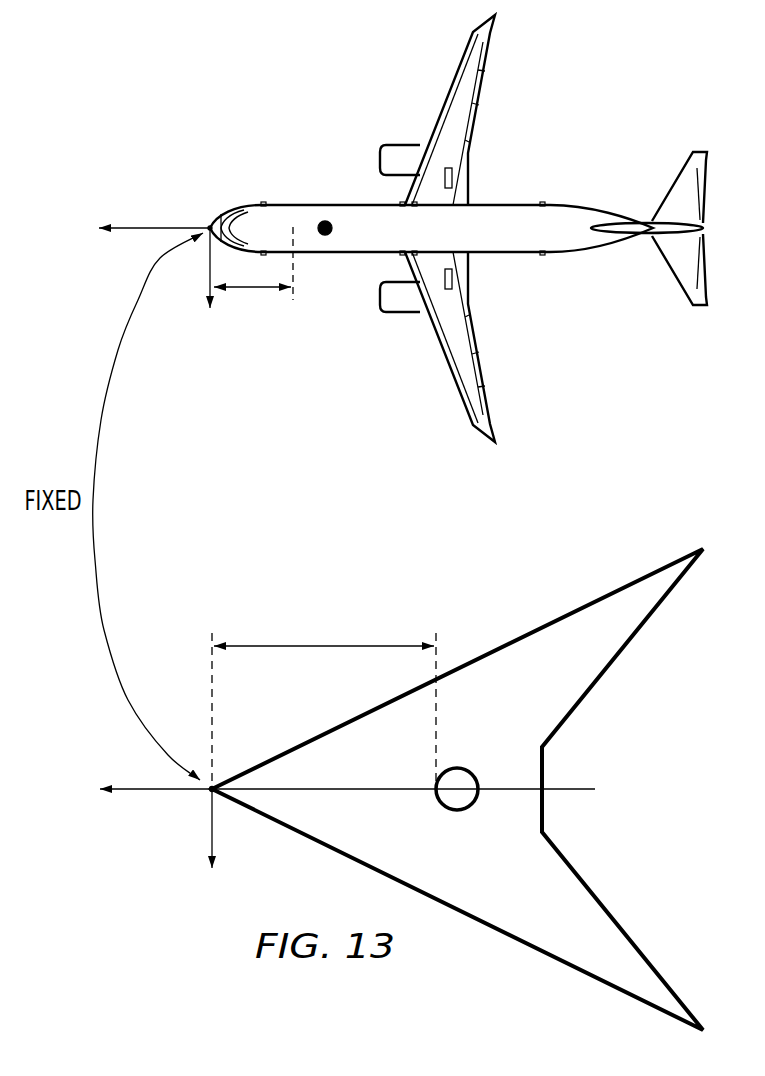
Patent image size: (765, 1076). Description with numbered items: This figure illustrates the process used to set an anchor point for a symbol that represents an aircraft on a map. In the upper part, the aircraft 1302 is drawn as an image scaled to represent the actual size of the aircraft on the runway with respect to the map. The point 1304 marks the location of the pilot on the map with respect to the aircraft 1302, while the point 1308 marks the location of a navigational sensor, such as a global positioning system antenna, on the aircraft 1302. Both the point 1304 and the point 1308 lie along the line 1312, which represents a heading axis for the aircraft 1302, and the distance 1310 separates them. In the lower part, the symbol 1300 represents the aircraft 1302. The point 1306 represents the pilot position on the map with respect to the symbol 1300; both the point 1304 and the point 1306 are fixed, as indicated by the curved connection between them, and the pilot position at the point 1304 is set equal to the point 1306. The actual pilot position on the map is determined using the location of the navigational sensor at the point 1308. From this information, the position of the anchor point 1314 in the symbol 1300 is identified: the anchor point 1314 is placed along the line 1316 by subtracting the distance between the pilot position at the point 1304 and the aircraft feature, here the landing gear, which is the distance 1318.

The symbol 1300 is at (594, 982).
The aircraft 1302 is at (450, 82).
The point 1304 is at (207, 226).
The point 1306 is at (208, 796).
The point 1308 is at (326, 219).
The distance 1310 is at (251, 290).
The line 1312 is at (122, 227).
The anchor point 1314 is at (460, 811).
The line 1316 is at (573, 788).
The distance 1318 is at (334, 645).